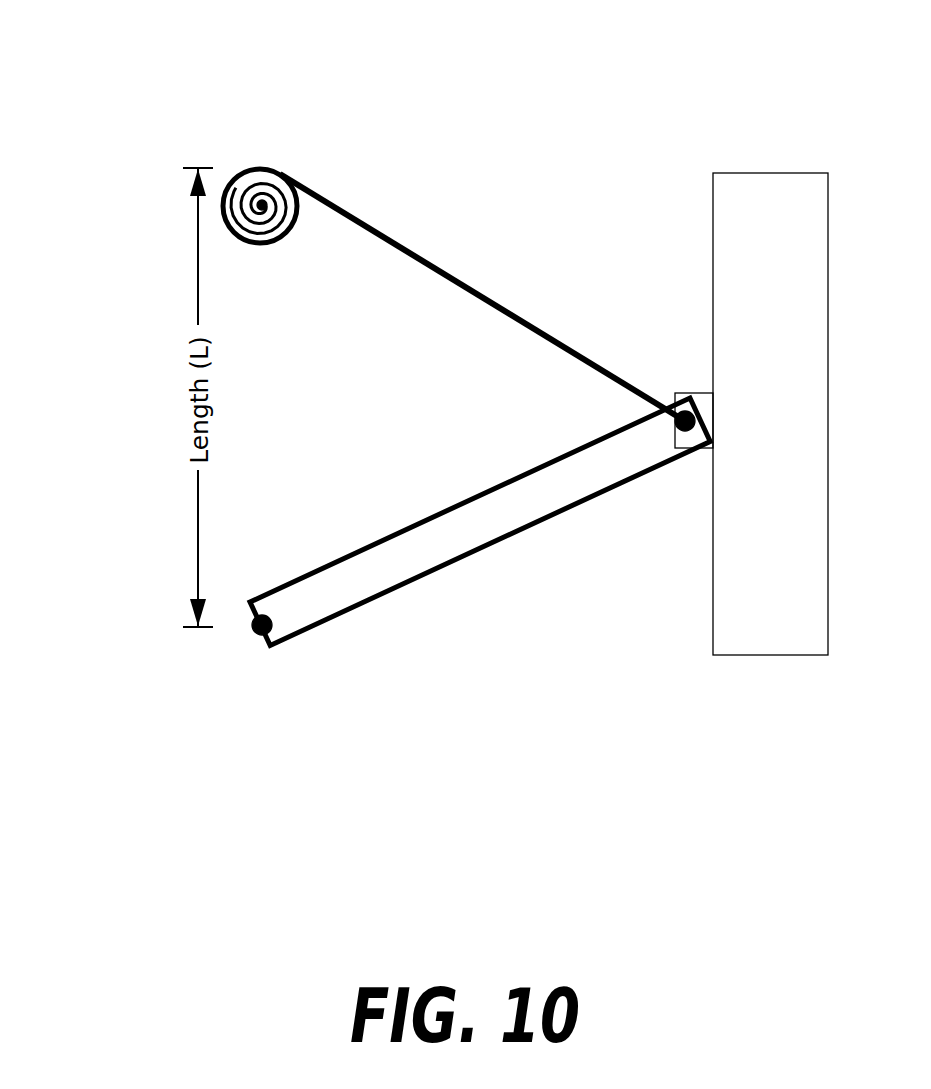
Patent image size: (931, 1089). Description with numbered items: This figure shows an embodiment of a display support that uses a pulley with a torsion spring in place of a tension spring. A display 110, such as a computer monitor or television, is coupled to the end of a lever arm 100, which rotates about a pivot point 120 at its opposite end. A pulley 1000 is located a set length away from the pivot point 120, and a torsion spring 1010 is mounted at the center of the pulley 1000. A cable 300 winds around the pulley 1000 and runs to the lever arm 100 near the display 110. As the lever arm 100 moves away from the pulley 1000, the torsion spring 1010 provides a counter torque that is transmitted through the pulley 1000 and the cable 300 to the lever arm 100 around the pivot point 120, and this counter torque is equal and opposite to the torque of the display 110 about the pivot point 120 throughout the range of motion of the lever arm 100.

The lever arm 100 is at (480, 554).
The display 110 is at (800, 437).
The pivot point 120 is at (332, 719).
The cable 300 is at (487, 300).
The pulley 1000 is at (182, 129).
The torsion spring 1010 is at (323, 279).